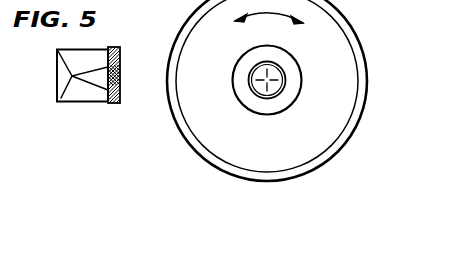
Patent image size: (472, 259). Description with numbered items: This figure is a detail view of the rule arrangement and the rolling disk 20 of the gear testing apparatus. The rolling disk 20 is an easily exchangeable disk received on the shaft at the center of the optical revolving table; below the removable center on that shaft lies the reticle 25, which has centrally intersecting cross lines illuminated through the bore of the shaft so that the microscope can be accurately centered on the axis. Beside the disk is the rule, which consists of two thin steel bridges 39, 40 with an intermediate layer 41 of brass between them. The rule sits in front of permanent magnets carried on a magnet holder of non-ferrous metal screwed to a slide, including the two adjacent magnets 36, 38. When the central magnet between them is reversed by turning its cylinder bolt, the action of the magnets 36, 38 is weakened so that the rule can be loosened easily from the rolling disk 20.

The rolling disk 20 is at (353, 80).
The reticle 25 is at (260, 89).
The permanent magnet 36 is at (79, 94).
The permanent magnet 38 is at (321, 12).
The steel bridge 39 is at (122, 50).
The steel bridge 40 is at (113, 101).
The intermediate layer 41 is at (122, 75).